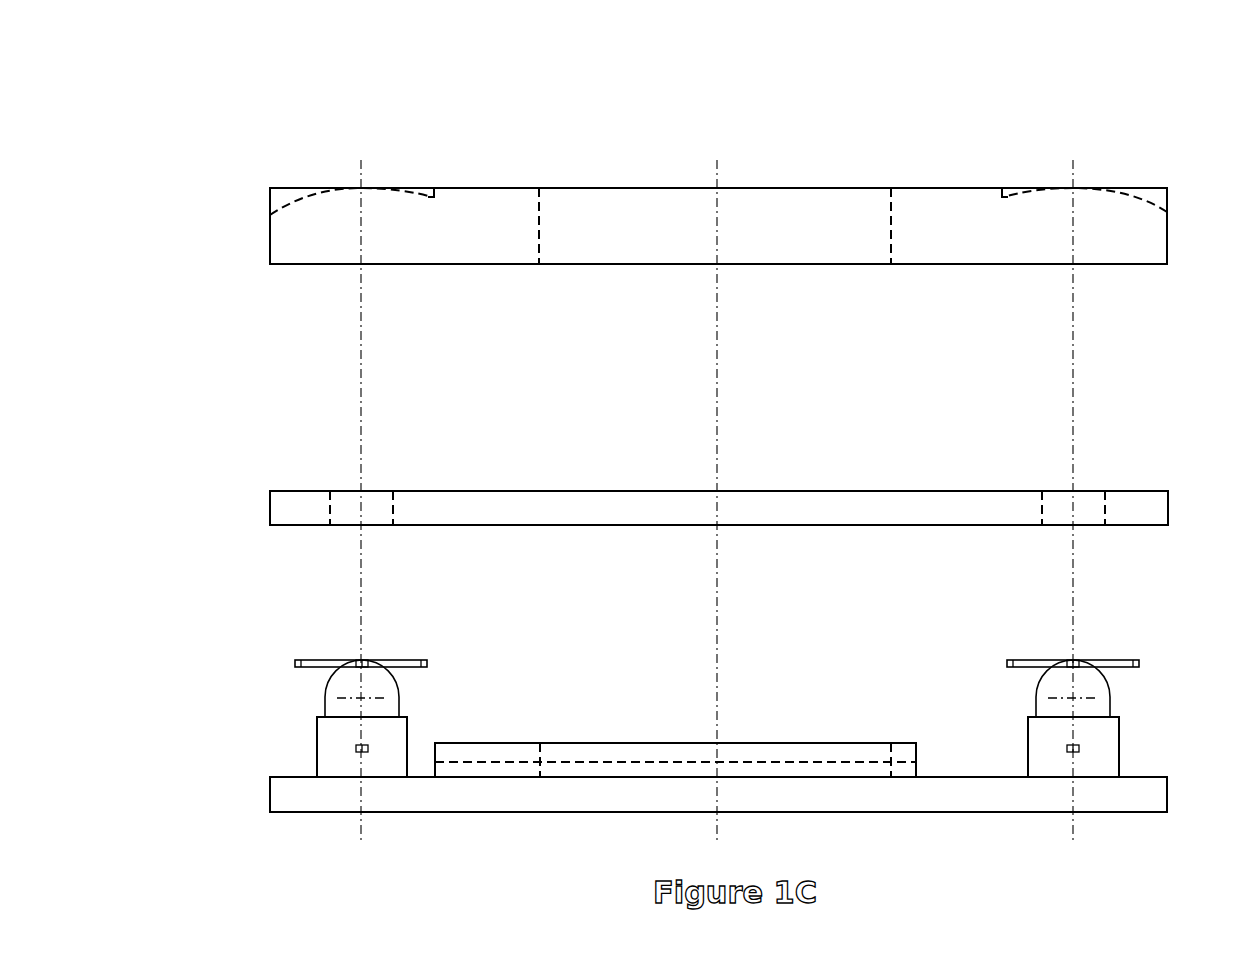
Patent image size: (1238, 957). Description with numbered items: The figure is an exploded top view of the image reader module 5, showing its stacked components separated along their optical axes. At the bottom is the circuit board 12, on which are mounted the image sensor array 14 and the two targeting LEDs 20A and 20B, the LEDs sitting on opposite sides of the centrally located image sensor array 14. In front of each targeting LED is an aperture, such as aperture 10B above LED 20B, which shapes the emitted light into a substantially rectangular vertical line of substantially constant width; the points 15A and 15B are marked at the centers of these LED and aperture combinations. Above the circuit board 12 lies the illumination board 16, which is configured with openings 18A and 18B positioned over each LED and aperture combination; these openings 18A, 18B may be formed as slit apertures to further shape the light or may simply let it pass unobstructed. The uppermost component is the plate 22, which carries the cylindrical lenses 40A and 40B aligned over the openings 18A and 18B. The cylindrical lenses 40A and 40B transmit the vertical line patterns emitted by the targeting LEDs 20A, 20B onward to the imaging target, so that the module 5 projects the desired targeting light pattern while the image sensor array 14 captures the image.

The image reader module 5 is at (1100, 80).
The circuit board 12 is at (1167, 790).
The image sensor array 14 is at (825, 762).
The illumination board 16 is at (1168, 491).
The opening 18A is at (1075, 527).
The opening 18B is at (362, 527).
The targeting LED 20A is at (1119, 752).
The targeting LED 20B is at (317, 752).
The lens plate 22 is at (1167, 264).
The cylindrical lens 40A is at (1167, 188).
The cylindrical lens 40B is at (270, 188).
The aperture 10B is at (295, 663).
The sensor center 15A is at (1073, 665).
The sensor center 15B is at (362, 665).